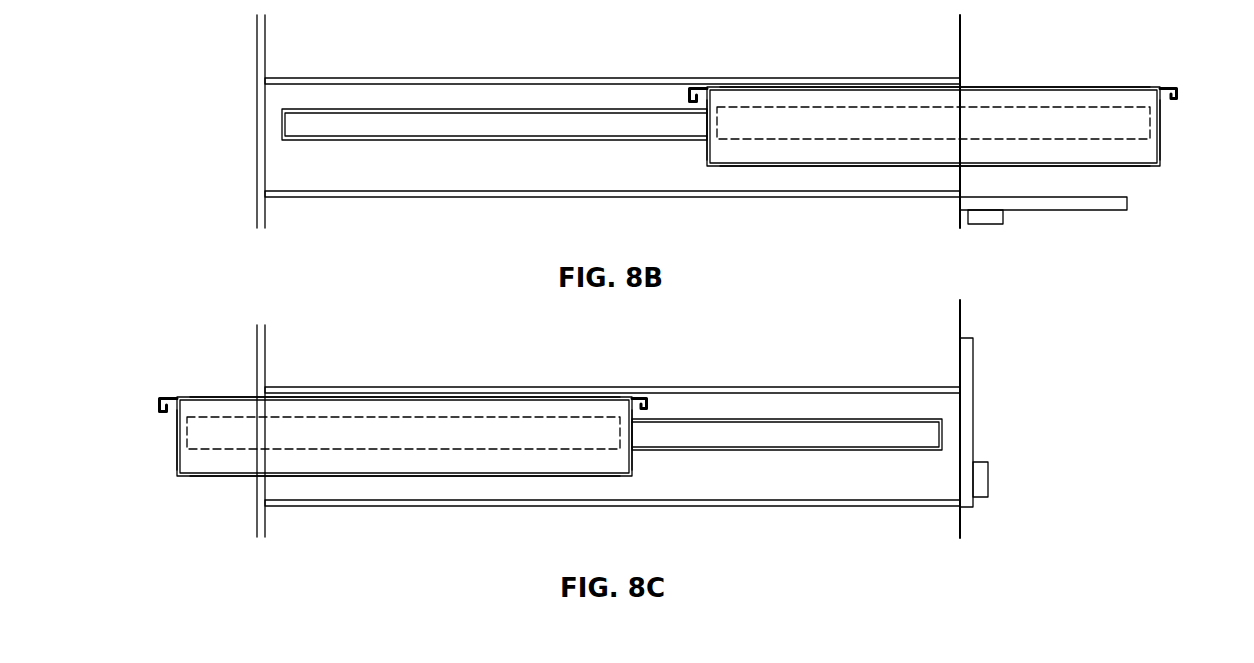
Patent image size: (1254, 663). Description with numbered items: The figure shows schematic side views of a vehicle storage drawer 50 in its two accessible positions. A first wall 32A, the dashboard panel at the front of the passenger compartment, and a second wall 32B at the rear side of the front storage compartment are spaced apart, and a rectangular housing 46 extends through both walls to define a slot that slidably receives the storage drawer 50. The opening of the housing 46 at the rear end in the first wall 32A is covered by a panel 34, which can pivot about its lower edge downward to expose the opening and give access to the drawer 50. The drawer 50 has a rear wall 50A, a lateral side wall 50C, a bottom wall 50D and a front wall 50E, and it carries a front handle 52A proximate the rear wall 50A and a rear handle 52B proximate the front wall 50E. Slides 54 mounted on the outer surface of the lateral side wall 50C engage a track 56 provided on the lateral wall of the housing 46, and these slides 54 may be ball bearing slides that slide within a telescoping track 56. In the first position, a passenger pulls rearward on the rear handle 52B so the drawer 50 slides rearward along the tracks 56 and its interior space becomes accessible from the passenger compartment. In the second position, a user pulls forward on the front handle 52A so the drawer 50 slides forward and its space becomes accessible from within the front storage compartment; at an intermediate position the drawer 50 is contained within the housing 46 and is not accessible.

In FIG. 8B, the first wall 32A is at (960, 30).
In FIG. 8C, the first wall 32A is at (963, 313).
In FIG. 8B, the second wall 32B is at (257, 57).
In FIG. 8C, the second wall 32B is at (257, 365).
In FIG. 8B, the panel 34 is at (1103, 210).
In FIG. 8C, the panel 34 is at (973, 367).
In FIG. 8B, the rectangular housing 46 is at (317, 97).
In FIG. 8C, the rectangular housing 46 is at (882, 407).
In FIG. 8B, the sliding storage drawer 50 is at (933, 122).
In FIG. 8C, the sliding storage drawer 50 is at (399, 416).
In FIG. 8B, the rear wall 50A is at (1162, 140).
In FIG. 8C, the rear wall 50A is at (633, 458).
In FIG. 8B, the lateral side wall 50C is at (928, 100).
In FIG. 8C, the lateral side wall 50C is at (465, 410).
In FIG. 8B, the bottom wall 50D is at (805, 162).
In FIG. 8C, the bottom wall 50D is at (360, 470).
In FIG. 8B, the front wall 50E is at (705, 150).
In FIG. 8C, the front wall 50E is at (177, 460).
In FIG. 8B, the front handle 52A is at (1178, 97).
In FIG. 8C, the front handle 52A is at (648, 406).
In FIG. 8B, the rear handle 52B is at (688, 97).
In FIG. 8C, the rear handle 52B is at (158, 408).
In FIG. 8B, the slides 54 is at (863, 110).
In FIG. 8C, the slides 54 is at (397, 410).
In FIG. 8B, the tracks 56 is at (463, 122).
In FIG. 8C, the tracks 56 is at (768, 435).